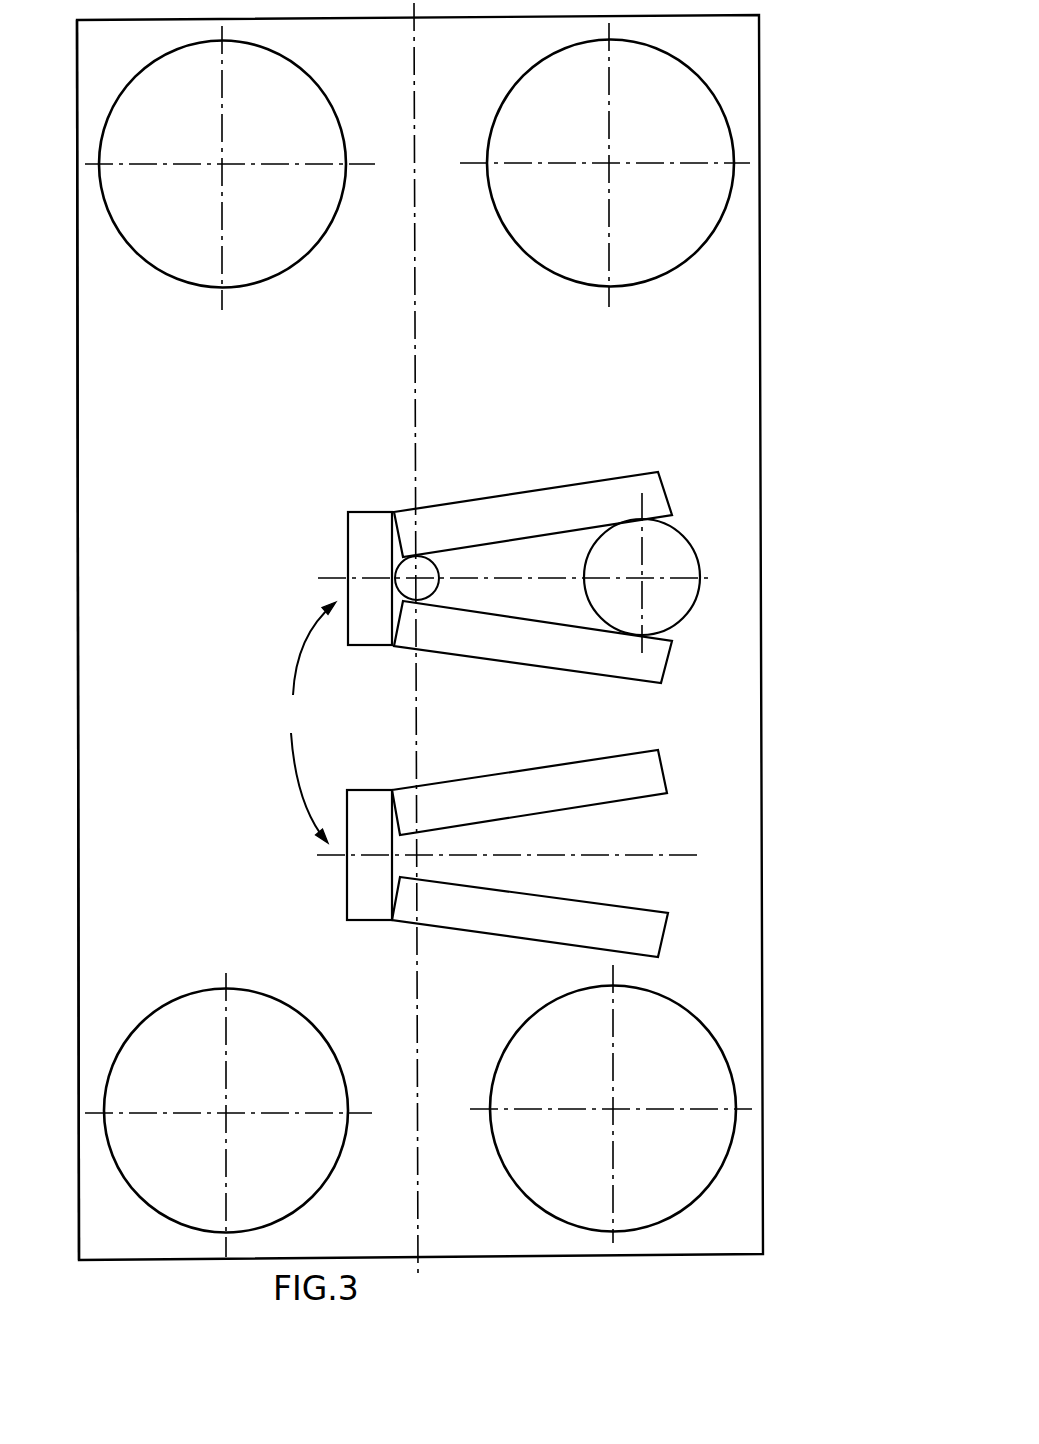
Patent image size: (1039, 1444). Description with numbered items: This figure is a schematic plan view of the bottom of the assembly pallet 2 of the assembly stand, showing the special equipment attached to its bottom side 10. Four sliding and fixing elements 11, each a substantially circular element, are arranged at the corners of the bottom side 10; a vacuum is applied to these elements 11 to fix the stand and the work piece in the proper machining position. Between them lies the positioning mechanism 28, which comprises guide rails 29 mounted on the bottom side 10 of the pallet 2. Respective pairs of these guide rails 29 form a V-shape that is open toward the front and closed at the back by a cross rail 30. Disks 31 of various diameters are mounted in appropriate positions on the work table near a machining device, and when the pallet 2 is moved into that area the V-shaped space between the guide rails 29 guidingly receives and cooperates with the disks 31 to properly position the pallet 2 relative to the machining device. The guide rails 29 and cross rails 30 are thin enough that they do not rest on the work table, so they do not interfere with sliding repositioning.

The pallet 2 is at (78, 427).
The bottom side 10 is at (100, 643).
The sliding and fixing elements 11 is at (136, 228).
The positioning mechanism 28 is at (304, 722).
The guide rails 29 is at (473, 512).
The cross rail 30 is at (358, 533).
The disks 31 is at (427, 570).